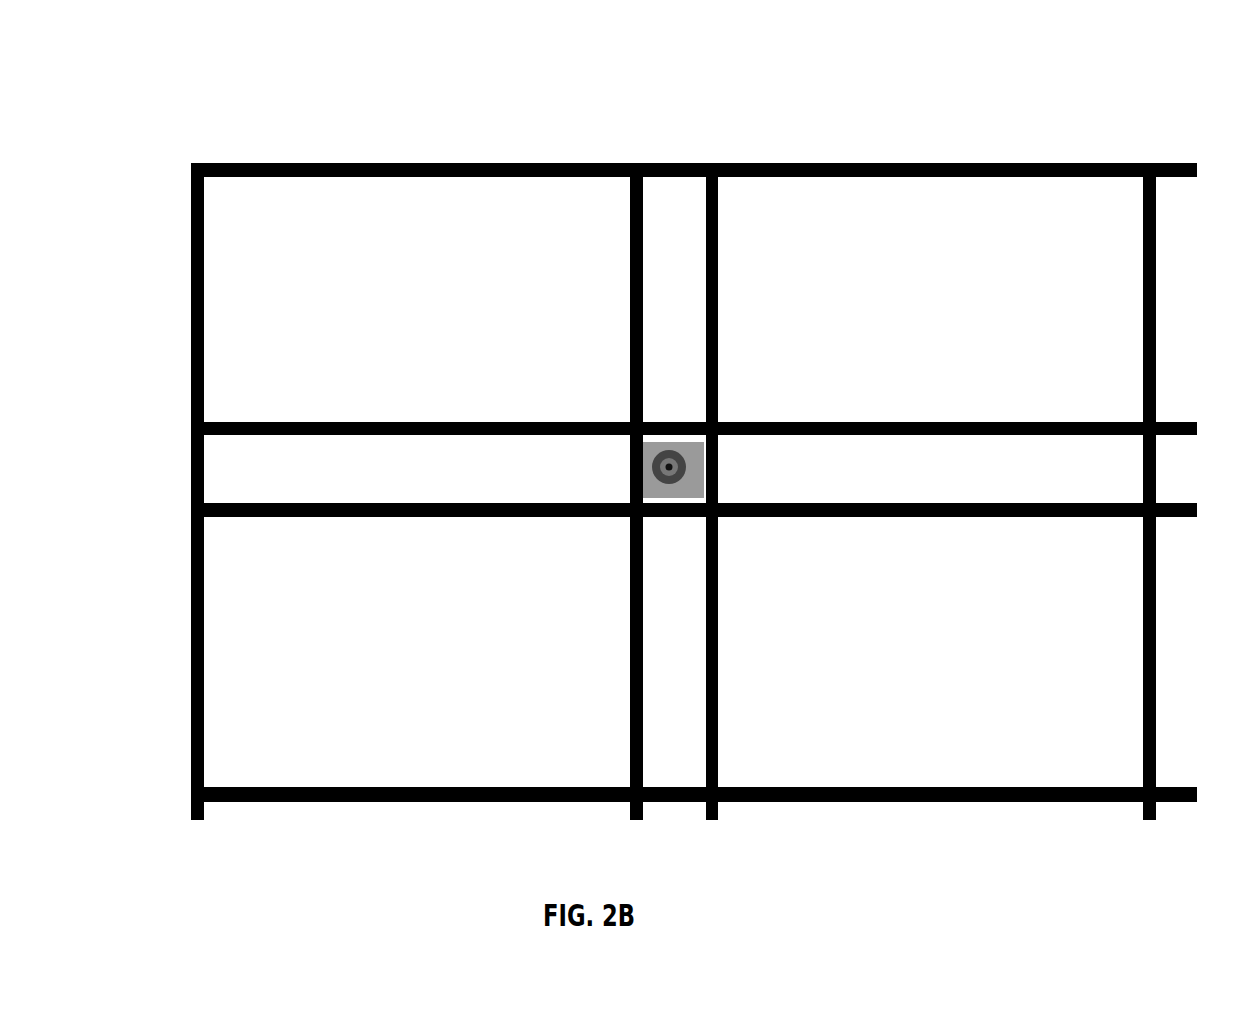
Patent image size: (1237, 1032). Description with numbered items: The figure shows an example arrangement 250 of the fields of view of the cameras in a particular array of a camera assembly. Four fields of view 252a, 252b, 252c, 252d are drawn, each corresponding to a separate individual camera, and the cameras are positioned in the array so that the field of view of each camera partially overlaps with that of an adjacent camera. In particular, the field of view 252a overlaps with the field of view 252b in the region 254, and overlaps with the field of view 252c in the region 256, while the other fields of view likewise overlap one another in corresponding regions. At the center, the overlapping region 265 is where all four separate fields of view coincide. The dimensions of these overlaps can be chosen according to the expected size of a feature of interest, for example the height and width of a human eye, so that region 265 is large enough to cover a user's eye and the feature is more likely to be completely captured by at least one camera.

The arrangement of fields of view 250 is at (689, 74).
The field of view 252a is at (200, 200).
The field of view 252b is at (210, 707).
The field of view 252c is at (962, 181).
The field of view 252d is at (1155, 711).
The overlapping region 254 is at (210, 462).
The overlapping region 256 is at (678, 205).
The overlapping region of four fields of view 265 is at (650, 442).